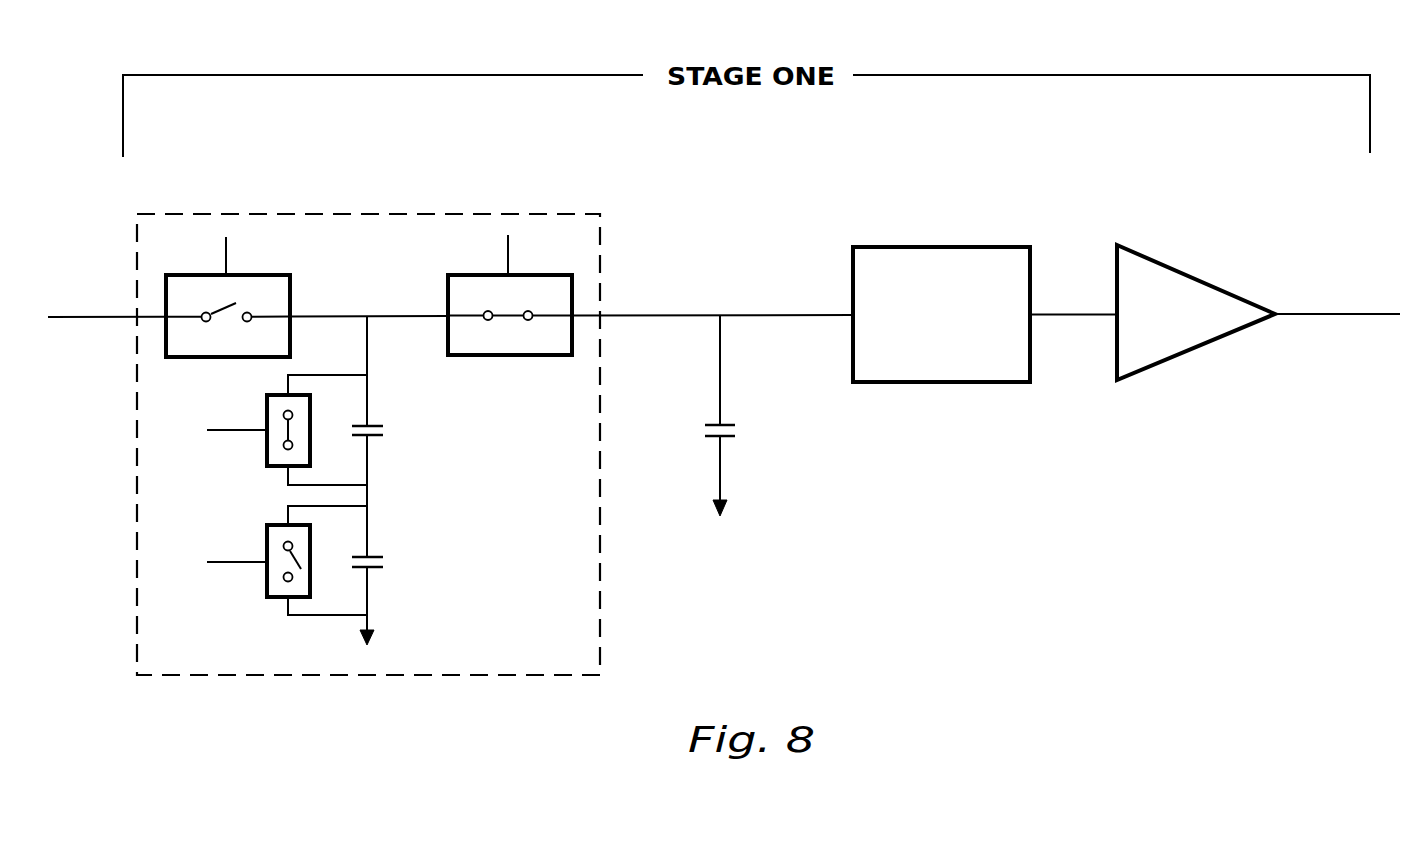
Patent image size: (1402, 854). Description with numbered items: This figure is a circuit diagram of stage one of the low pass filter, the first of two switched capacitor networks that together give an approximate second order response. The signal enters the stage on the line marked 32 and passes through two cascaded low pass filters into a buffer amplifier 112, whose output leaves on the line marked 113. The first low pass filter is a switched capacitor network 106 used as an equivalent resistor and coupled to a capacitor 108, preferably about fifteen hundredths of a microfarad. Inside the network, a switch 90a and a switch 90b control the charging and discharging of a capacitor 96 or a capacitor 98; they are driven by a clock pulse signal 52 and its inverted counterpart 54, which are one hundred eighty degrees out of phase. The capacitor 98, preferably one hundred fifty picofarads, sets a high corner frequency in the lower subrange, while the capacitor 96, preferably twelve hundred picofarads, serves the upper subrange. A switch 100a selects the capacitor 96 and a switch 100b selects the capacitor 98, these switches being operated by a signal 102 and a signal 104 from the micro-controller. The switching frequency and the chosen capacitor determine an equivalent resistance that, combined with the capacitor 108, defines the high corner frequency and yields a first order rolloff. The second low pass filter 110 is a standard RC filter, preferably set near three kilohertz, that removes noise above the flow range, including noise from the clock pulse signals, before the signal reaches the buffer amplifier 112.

The input signal line 32 is at (88, 316).
The clock pulse signal 52 is at (226, 258).
The inverted clock pulse signal 54 is at (508, 258).
The switch 90a is at (243, 357).
The switch 90b is at (549, 356).
The capacitor 96 is at (380, 426).
The capacitor 98 is at (381, 557).
The switch 100a is at (268, 466).
The switch 100b is at (268, 597).
The signal 102 is at (207, 433).
The signal 104 is at (207, 565).
The switched capacitor network 106 is at (567, 213).
The capacitor 108 is at (731, 425).
The second low pass filter 110 is at (888, 382).
The buffer amplifier 112 is at (1195, 348).
The output line 113 is at (1310, 313).